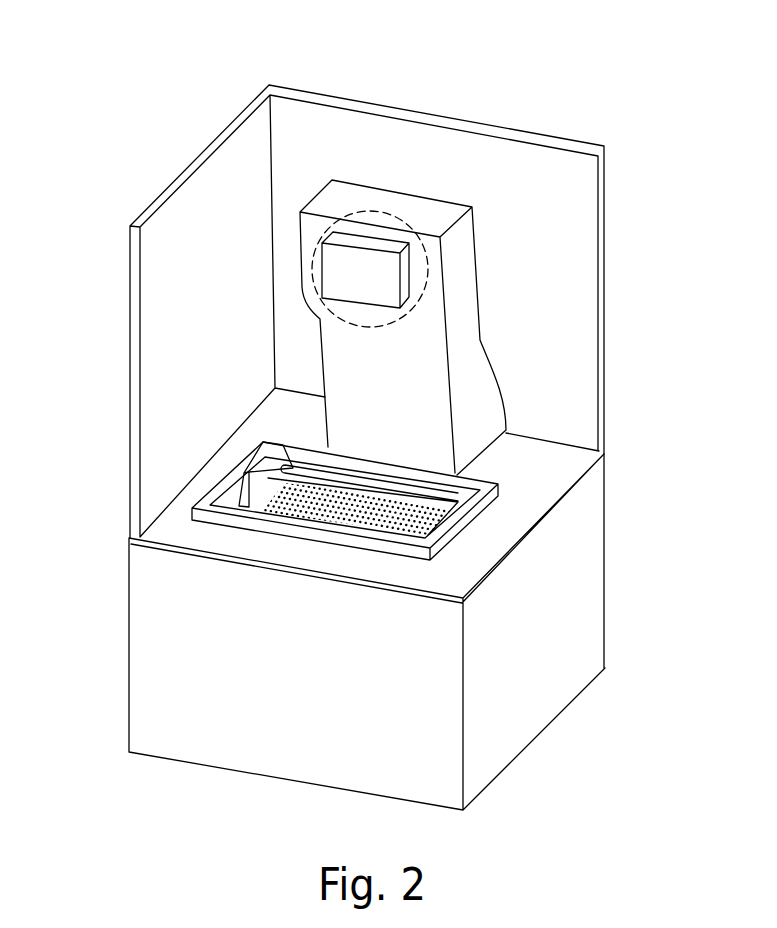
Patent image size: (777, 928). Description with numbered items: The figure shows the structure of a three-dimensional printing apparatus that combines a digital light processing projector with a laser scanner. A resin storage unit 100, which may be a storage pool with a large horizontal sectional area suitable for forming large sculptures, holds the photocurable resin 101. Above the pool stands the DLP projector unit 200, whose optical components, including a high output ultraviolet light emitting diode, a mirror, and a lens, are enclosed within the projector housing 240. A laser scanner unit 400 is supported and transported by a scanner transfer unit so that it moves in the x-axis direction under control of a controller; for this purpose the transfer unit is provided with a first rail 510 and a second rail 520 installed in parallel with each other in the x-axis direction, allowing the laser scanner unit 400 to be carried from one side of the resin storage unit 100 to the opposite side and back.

The resin storage unit 100 is at (432, 447).
The photocurable resin 101 is at (238, 594).
The DLP projector unit 200 is at (377, 210).
The projector housing 240 is at (517, 262).
The laser scanner unit 400 is at (170, 459).
The first rail 510 is at (470, 477).
The second rail 520 is at (267, 544).